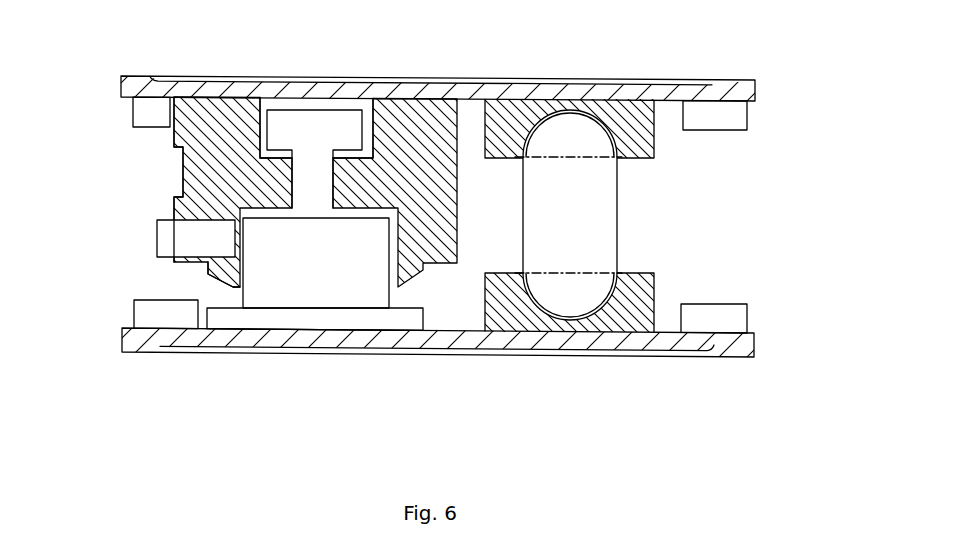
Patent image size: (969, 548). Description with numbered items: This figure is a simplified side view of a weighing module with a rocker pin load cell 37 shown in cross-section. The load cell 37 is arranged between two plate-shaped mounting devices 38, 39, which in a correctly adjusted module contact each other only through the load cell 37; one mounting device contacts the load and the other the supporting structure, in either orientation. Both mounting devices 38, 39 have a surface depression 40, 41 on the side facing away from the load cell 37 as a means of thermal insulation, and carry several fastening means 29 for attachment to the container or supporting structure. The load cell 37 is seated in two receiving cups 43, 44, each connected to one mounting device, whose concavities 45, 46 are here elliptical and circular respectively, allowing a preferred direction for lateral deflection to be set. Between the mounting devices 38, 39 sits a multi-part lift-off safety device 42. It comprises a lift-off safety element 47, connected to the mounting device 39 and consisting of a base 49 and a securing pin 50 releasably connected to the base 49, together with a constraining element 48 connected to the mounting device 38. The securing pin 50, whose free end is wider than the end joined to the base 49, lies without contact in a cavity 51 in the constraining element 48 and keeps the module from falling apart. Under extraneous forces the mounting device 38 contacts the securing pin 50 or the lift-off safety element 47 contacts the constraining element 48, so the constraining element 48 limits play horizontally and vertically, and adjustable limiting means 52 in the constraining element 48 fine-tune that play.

The fastening means 29 is at (152, 117).
The rocker pin load cell 37 is at (575, 213).
The mounting device 38 is at (743, 89).
The mounting device 39 is at (728, 347).
The surface depression 40 is at (238, 80).
The surface depression 41 is at (380, 347).
The lift-off safety device 42 is at (138, 170).
The receiving cup 43 is at (627, 117).
The receiving cup 44 is at (633, 308).
The concavity 45 is at (503, 117).
The concavity 46 is at (523, 298).
The lift-off safety element 47 is at (220, 295).
The constraining element 48 is at (191, 99).
The base 49 is at (297, 295).
The securing pin 50 is at (323, 133).
The cavity 51 is at (310, 105).
The limiting means 52 is at (167, 237).